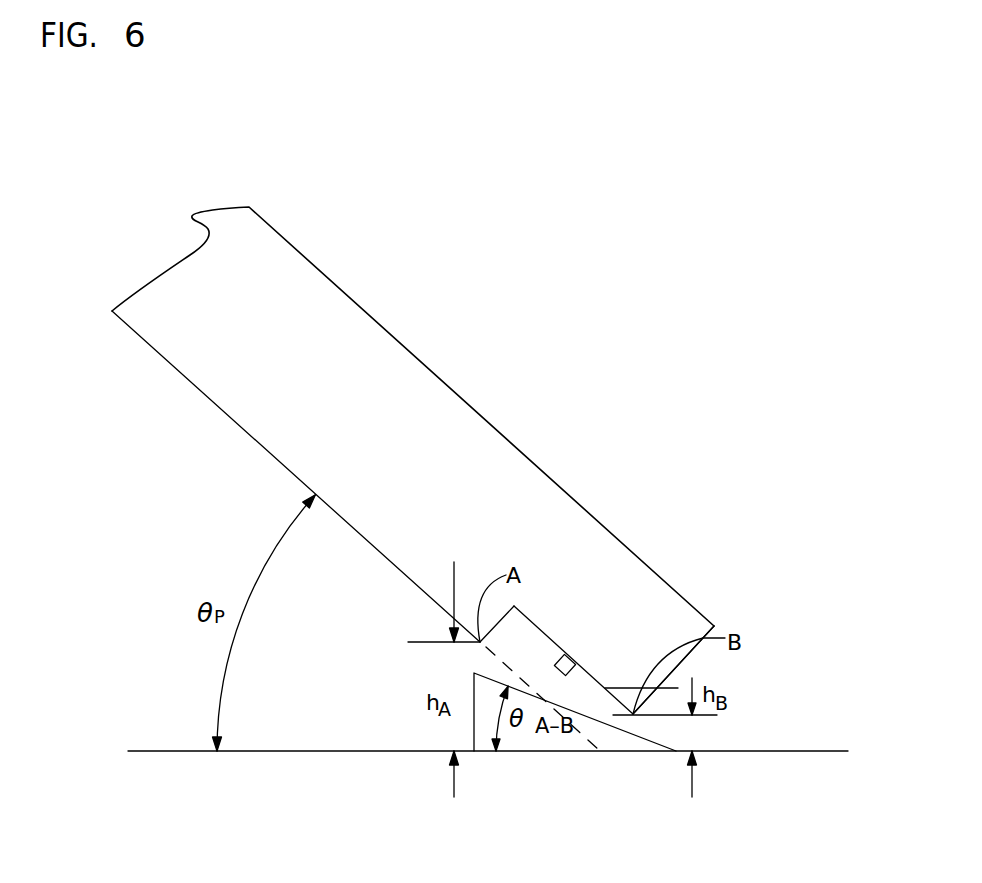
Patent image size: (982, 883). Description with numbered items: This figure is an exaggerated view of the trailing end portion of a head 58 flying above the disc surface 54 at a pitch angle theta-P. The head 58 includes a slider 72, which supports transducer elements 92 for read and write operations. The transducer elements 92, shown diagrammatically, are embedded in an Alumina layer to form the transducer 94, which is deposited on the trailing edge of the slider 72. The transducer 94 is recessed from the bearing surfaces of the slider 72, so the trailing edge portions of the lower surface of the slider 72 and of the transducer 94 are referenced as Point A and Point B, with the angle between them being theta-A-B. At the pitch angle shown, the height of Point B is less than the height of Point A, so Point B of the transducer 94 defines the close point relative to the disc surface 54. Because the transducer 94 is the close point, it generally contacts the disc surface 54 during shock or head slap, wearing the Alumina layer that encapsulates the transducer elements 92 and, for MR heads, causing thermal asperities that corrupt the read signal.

The slider 72 is at (393, 337).
The head 58 is at (597, 478).
The transducer 94 is at (640, 547).
The transducer elements 92 is at (563, 661).
The disc surface 54 is at (727, 745).